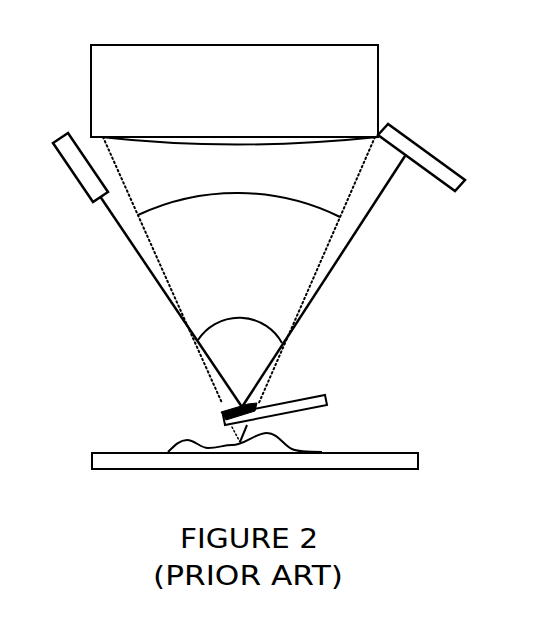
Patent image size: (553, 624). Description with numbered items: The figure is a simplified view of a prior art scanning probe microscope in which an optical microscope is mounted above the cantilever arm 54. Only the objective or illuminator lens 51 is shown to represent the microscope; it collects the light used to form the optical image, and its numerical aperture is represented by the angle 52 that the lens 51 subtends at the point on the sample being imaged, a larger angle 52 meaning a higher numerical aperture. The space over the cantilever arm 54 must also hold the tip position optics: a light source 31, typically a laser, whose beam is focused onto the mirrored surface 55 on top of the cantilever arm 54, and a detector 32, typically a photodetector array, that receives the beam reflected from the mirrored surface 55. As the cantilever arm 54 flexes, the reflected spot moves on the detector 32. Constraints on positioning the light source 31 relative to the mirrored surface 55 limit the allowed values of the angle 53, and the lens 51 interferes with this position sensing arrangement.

The objective or illuminator lens 51 is at (333, 45).
The light source 31 is at (70, 152).
The detector 32 is at (425, 158).
The angle 52 is at (232, 194).
The angle 53 is at (246, 319).
The cantilever arm 54 is at (316, 394).
The mirrored surface 55 is at (225, 407).